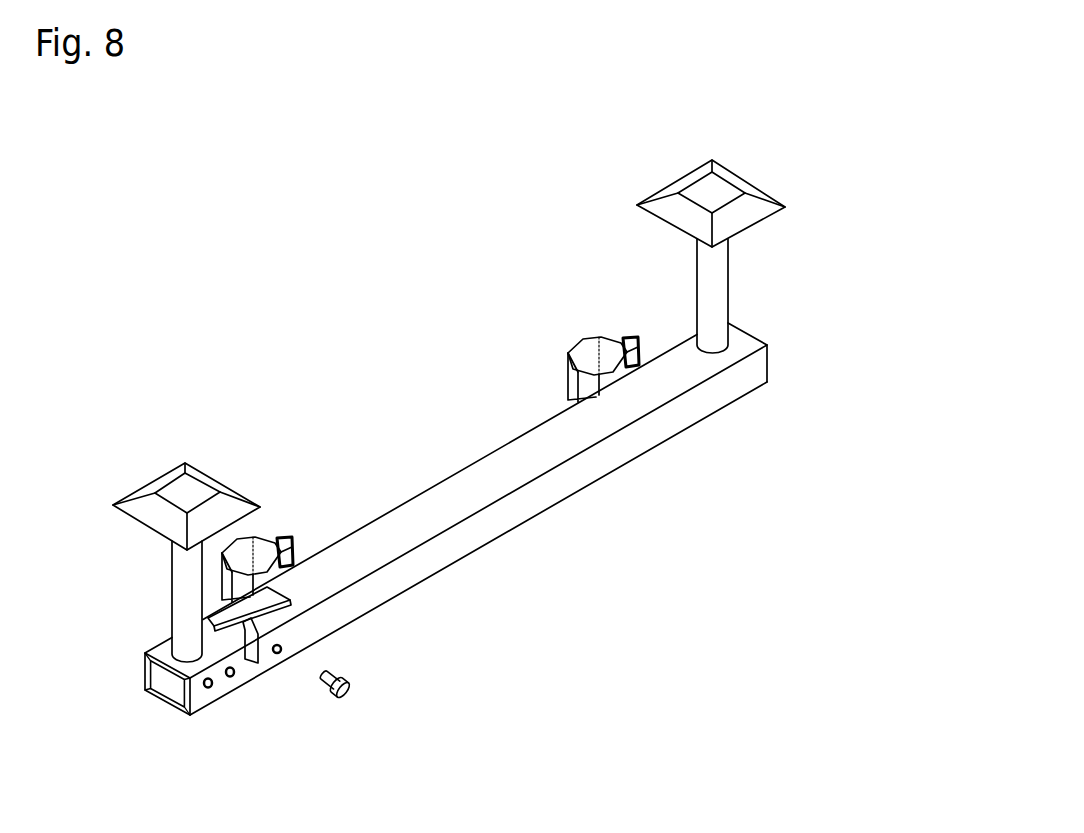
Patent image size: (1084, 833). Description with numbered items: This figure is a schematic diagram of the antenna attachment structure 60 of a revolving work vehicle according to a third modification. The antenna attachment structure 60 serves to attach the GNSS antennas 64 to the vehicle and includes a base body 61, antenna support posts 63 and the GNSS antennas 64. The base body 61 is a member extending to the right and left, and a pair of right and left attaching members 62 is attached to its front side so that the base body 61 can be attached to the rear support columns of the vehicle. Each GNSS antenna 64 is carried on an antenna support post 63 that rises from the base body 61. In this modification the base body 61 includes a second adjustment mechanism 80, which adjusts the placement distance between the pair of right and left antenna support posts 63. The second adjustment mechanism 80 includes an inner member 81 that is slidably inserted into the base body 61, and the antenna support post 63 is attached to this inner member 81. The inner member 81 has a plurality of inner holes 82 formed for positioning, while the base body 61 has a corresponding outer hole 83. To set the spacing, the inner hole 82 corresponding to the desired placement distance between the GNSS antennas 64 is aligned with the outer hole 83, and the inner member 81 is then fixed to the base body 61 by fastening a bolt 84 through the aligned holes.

The antenna attachment structure 60 is at (328, 333).
The base body 61 is at (466, 482).
The attaching member 62 is at (264, 537).
The antenna support post 63 is at (186, 598).
The GNSS antenna 64 is at (172, 473).
The second adjustment mechanism 80 is at (266, 701).
The inner member 81 is at (221, 690).
The inner hole 82 is at (176, 697).
The outer hole 83 is at (282, 649).
The bolt 84 is at (346, 698).